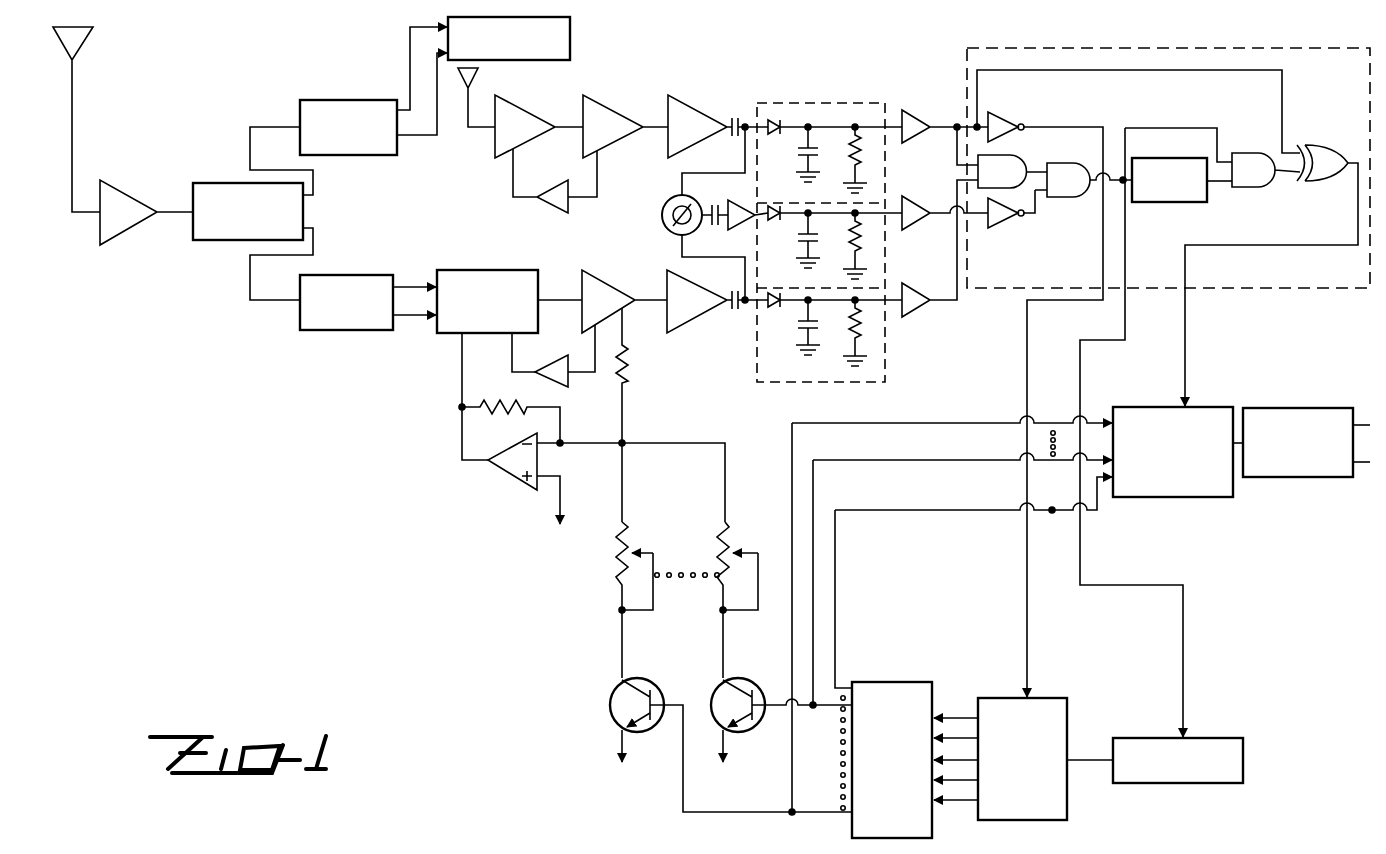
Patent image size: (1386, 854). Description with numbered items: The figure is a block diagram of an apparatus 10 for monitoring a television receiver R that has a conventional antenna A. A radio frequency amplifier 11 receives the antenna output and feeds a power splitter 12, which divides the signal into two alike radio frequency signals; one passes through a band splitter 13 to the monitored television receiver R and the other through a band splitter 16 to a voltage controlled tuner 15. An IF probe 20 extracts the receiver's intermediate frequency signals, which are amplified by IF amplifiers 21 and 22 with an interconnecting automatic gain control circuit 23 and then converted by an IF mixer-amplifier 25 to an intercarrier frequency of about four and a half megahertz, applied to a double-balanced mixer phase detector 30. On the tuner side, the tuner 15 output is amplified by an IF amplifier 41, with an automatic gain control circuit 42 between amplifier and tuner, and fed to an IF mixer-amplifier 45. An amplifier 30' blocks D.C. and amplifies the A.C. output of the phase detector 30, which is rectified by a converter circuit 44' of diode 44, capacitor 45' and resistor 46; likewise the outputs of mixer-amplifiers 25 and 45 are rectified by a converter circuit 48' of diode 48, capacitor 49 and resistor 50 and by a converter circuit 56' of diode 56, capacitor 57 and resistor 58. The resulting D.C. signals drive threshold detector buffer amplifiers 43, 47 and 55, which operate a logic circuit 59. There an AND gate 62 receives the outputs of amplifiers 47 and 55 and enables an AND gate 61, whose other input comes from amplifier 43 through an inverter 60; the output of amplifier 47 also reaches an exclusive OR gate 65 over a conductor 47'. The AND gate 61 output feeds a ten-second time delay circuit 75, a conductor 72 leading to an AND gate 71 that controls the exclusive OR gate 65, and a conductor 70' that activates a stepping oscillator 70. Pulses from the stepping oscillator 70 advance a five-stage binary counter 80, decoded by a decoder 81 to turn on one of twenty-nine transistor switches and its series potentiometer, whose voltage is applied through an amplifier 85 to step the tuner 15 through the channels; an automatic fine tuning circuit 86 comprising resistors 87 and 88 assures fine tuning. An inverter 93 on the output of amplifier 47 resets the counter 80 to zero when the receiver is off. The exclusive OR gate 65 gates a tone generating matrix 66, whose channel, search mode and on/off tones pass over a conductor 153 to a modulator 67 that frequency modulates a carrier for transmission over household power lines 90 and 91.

The antenna A is at (77, 44).
The radio frequency amplifier 11 is at (96, 236).
The power splitter 12 is at (210, 181).
The band splitter 13 is at (305, 97).
The television receiver R is at (570, 33).
The IF probe 20 is at (478, 70).
The IF amplifier 21 is at (539, 126).
The IF amplifier 22 is at (625, 126).
The IF mixer-amplifier 25 is at (718, 126).
The automatic gain control circuit 23 is at (540, 208).
The phase detector 30 is at (658, 213).
The amplifier 30' is at (732, 227).
The diode 48 is at (812, 111).
The converter circuit 48' is at (821, 223).
The capacitor 49 is at (800, 155).
The resistor 50 is at (866, 150).
The threshold detector buffer amplifier 47 is at (939, 120).
The diode 44 is at (813, 200).
The capacitor 45' is at (792, 240).
The resistor 46 is at (866, 236).
The converter circuit 44' is at (910, 259).
The threshold detector buffer amplifier 43 is at (916, 203).
The diode 56 is at (810, 315).
The capacitor 57 is at (798, 326).
The resistor 58 is at (866, 328).
The converter circuit 56' is at (916, 361).
The threshold detector buffer amplifier 55 is at (926, 306).
The logic circuit 59 is at (1118, 48).
The conductor 47' is at (1146, 103).
The inverter 93 is at (1010, 112).
The AND gate 62 is at (1018, 160).
The AND gate 61 is at (1072, 196).
The inverter 60 is at (1008, 226).
The conductor 72 is at (1152, 127).
The conductor 70' is at (1151, 222).
The time delay circuit 75 is at (1205, 200).
The AND gate 71 is at (1253, 153).
The exclusive OR gate 65 is at (1318, 148).
The tone generating matrix 66 is at (1137, 407).
The conductor 153 is at (1236, 450).
The modulator 67 is at (1263, 407).
The power line 90 is at (1370, 425).
The power line 91 is at (1370, 462).
The band splitter 16 is at (328, 330).
The voltage controlled tuner 15 is at (475, 272).
The apparatus 10 is at (422, 367).
The automatic gain control circuit 42 is at (568, 385).
The IF amplifier 41 is at (624, 301).
The IF mixer-amplifier 45 is at (717, 301).
The resistor 88 is at (507, 400).
The amplifier 85 is at (507, 470).
The resistor 87 is at (630, 352).
The automatic fine tuning circuit 86 is at (638, 383).
The decoder 81 is at (893, 682).
The binary counter 80 is at (1067, 700).
The stepping oscillator 70 is at (1182, 745).